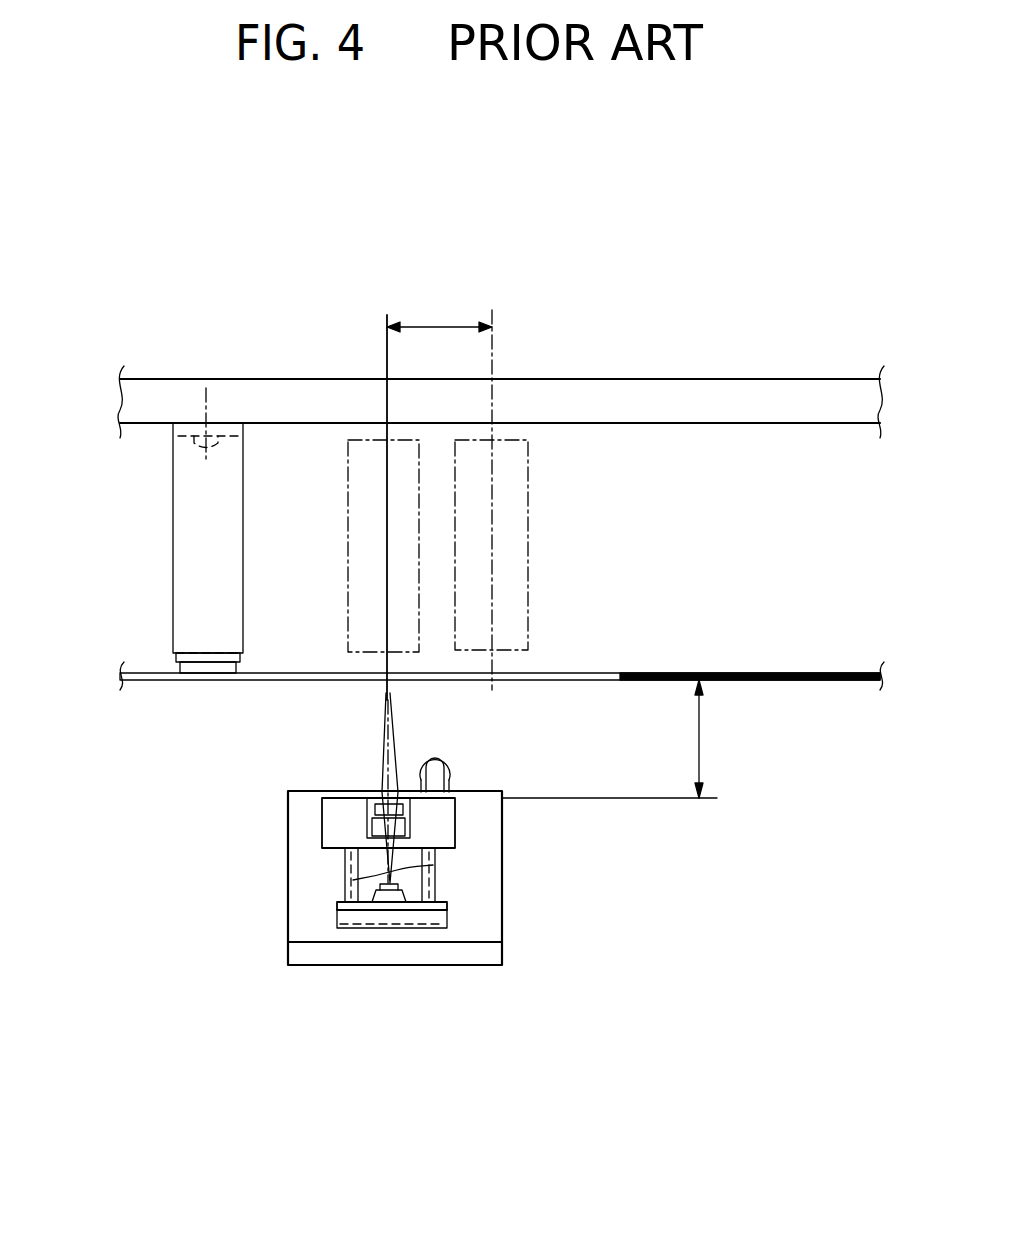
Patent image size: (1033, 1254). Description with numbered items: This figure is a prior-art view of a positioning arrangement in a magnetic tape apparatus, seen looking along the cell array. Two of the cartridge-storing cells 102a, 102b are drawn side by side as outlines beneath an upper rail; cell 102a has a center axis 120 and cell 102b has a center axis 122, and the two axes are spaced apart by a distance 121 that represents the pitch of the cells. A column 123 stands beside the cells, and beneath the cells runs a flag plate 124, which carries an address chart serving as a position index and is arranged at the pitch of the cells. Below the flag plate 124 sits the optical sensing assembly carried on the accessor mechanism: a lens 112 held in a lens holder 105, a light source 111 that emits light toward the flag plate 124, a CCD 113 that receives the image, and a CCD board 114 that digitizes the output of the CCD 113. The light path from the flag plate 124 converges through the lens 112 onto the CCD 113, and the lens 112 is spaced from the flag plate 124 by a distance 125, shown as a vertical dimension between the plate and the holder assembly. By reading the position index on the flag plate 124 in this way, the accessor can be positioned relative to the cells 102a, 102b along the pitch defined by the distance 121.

The cell 102a is at (357, 480).
The cell 102b is at (512, 468).
The lens holder 105 is at (442, 827).
The light source 111 is at (450, 760).
The lens 112 is at (377, 823).
The CCD 113 is at (395, 895).
The CCD board 114 is at (353, 917).
The center axis 120 is at (387, 315).
The distance 121 is at (438, 325).
The center axis 122 is at (492, 310).
The probe column 123 is at (188, 495).
The flag plate 124 is at (165, 681).
The distance 125 is at (699, 738).